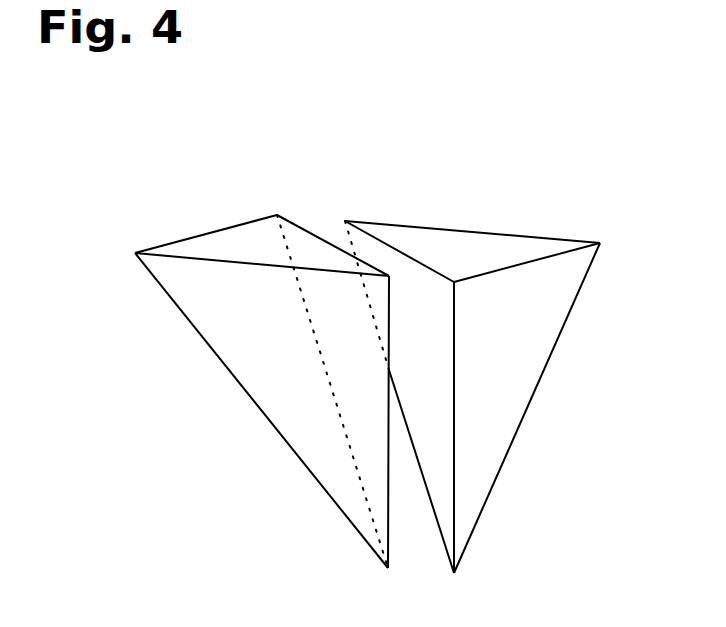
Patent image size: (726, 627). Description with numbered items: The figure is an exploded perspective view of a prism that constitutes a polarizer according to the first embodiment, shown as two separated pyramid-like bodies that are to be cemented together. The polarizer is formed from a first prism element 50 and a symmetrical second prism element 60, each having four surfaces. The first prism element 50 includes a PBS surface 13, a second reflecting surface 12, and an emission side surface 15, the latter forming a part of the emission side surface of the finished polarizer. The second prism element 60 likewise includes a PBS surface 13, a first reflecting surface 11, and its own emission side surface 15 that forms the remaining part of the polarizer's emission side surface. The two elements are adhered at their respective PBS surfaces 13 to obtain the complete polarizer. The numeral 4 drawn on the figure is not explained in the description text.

The second prism element 60 is at (177, 242).
The first prism element 50 is at (547, 238).
The emission side surface 15 is at (225, 240).
The PBS surface 13 is at (301, 242).
The first reflecting surface 11 is at (203, 340).
The second reflecting surface 12 is at (547, 305).
The side face 4 is at (510, 387).